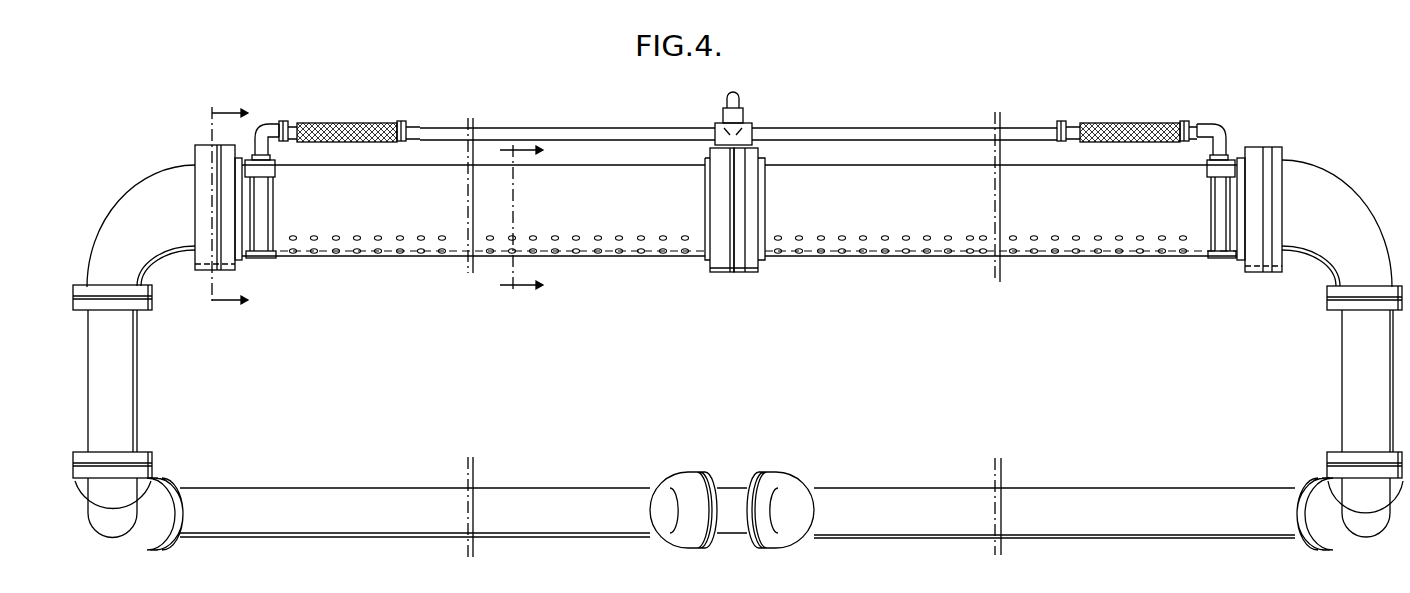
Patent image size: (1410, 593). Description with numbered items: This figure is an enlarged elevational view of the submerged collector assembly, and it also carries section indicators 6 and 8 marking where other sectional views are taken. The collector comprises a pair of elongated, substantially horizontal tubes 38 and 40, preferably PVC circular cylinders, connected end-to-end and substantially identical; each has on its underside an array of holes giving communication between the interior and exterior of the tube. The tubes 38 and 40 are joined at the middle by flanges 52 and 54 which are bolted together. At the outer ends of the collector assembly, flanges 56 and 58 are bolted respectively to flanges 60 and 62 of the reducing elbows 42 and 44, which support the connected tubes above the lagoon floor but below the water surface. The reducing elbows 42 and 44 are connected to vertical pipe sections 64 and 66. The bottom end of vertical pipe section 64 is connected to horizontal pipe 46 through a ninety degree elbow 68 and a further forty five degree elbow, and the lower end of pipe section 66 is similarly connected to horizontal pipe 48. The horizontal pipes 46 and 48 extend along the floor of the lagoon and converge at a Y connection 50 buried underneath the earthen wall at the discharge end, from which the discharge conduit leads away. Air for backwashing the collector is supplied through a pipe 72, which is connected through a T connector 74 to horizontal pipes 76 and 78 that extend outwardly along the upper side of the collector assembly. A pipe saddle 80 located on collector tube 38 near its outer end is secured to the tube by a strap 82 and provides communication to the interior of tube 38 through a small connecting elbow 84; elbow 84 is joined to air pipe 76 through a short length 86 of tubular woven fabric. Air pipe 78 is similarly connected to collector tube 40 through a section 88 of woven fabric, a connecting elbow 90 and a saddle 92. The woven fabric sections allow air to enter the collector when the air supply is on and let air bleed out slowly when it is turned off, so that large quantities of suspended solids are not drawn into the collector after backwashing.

The tube 38 is at (632, 208).
The tube 40 is at (927, 217).
The reducing elbow 42 is at (140, 206).
The reducing elbow 44 is at (1350, 212).
The pipe 46 is at (328, 497).
The pipe 48 is at (951, 490).
The Y connection 50 is at (732, 487).
The flange 52 is at (720, 272).
The flange 54 is at (751, 272).
The flange 56 is at (222, 262).
The flange 58 is at (1253, 270).
The flange 60 is at (200, 157).
The flange 62 is at (1273, 158).
The vertical pipe section 64 is at (125, 382).
The vertical pipe section 66 is at (1352, 362).
The ninety degree elbow 68 is at (107, 518).
The pipe 72 is at (740, 94).
The T connector 74 is at (748, 130).
The horizontal pipe 76 is at (590, 133).
The horizontal pipe 78 is at (918, 132).
The pipe saddle 80 is at (268, 170).
The strap 82 is at (260, 215).
The connecting elbow 84 is at (266, 132).
The tubular woven fabric section 86 is at (352, 124).
The woven fabric section 88 is at (1122, 124).
The connecting elbow 90 is at (1216, 132).
The saddle 92 is at (1210, 170).
The section line 8- 8 is at (214, 211).
The section line 6- 6 is at (507, 218).